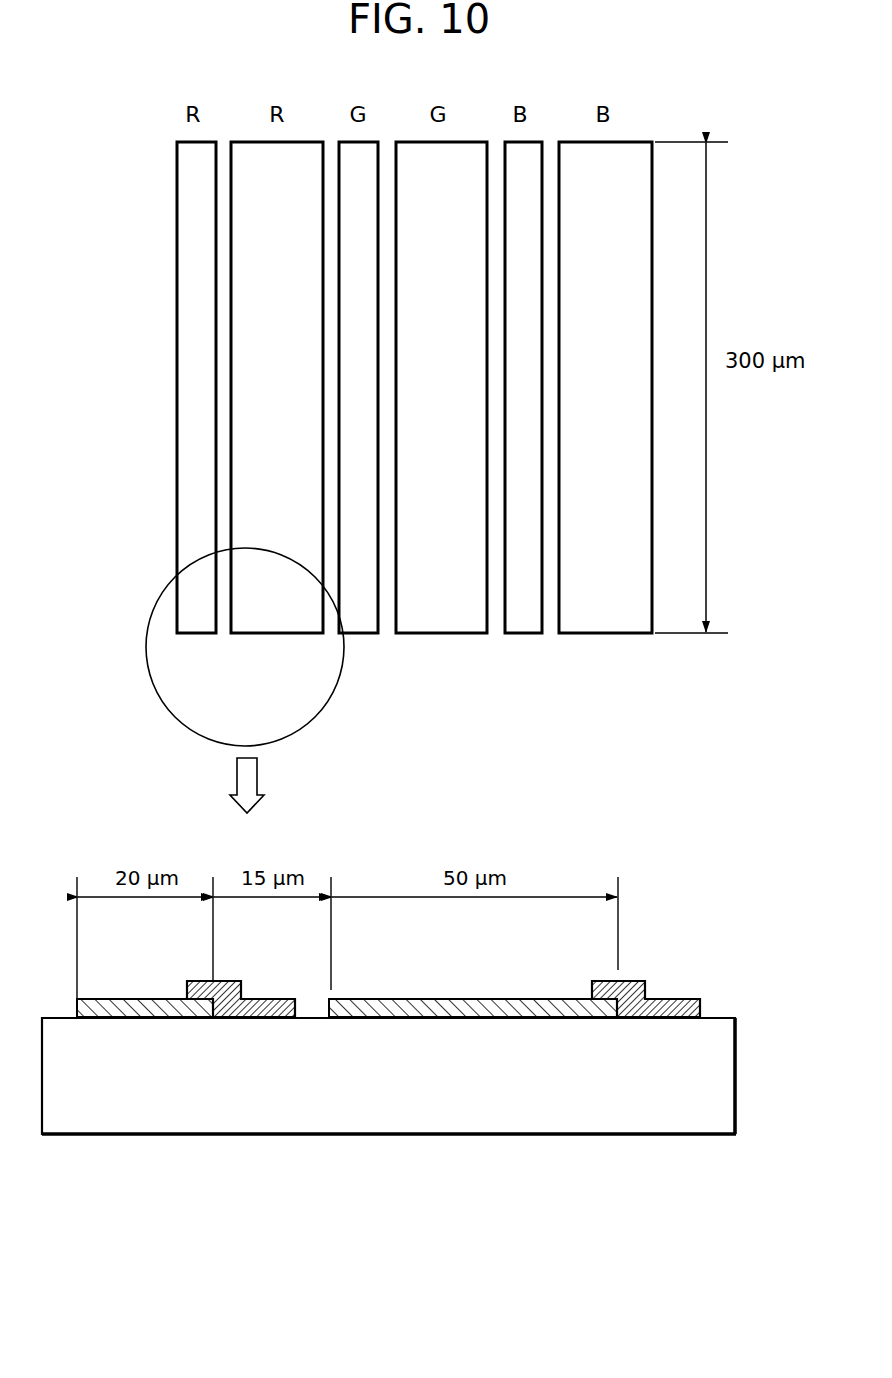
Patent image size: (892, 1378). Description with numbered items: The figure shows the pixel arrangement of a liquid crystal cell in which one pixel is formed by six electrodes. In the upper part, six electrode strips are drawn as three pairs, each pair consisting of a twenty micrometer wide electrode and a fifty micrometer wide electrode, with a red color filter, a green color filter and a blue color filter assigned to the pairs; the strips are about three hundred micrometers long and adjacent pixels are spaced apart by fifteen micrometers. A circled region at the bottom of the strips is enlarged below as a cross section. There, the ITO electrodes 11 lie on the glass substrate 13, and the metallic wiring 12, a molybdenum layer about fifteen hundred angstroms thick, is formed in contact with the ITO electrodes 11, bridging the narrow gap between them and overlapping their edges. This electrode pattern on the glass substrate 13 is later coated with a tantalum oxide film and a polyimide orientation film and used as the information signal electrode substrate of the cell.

The ITO electrode 11 is at (130, 1012).
The metallic wiring 12 is at (260, 1012).
The glass substrate 13 is at (485, 1103).